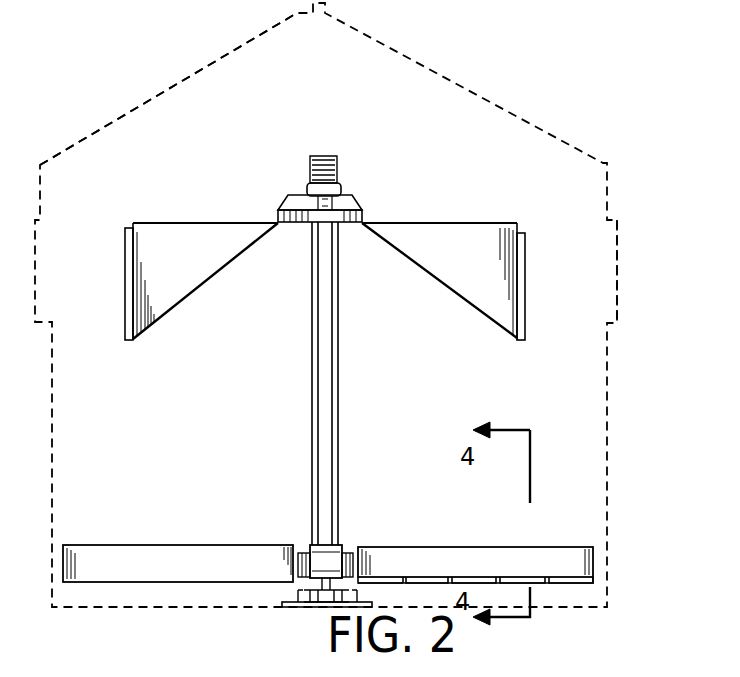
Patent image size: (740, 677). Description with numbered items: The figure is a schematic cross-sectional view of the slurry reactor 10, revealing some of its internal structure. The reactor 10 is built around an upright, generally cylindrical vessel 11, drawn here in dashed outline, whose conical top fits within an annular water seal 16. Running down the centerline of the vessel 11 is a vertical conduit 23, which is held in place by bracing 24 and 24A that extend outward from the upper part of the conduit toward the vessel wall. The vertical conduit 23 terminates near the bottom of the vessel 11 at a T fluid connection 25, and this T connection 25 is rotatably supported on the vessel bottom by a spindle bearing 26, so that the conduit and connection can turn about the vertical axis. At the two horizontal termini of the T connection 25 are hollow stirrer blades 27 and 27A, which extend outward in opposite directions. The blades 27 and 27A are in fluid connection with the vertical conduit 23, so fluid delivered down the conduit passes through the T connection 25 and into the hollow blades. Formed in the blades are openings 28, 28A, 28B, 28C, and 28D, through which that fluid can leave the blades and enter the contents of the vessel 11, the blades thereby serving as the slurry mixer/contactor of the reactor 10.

The slurry reactor 10 is at (172, 68).
The cylindrical vessel 11 is at (594, 413).
The annular water seal 16 is at (617, 262).
The vertical conduit 23 is at (339, 363).
The bracing 24 is at (181, 236).
The bracing 24A is at (440, 237).
The T fluid connection 25 is at (307, 560).
The spindle bearing 26 is at (330, 604).
The hollow stirrer blade 27 is at (115, 558).
The hollow stirrer blade 27A is at (487, 548).
The opening 28 is at (382, 578).
The opening 28A is at (428, 577).
The opening 28B is at (473, 577).
The opening 28C is at (525, 578).
The opening 28D is at (578, 577).